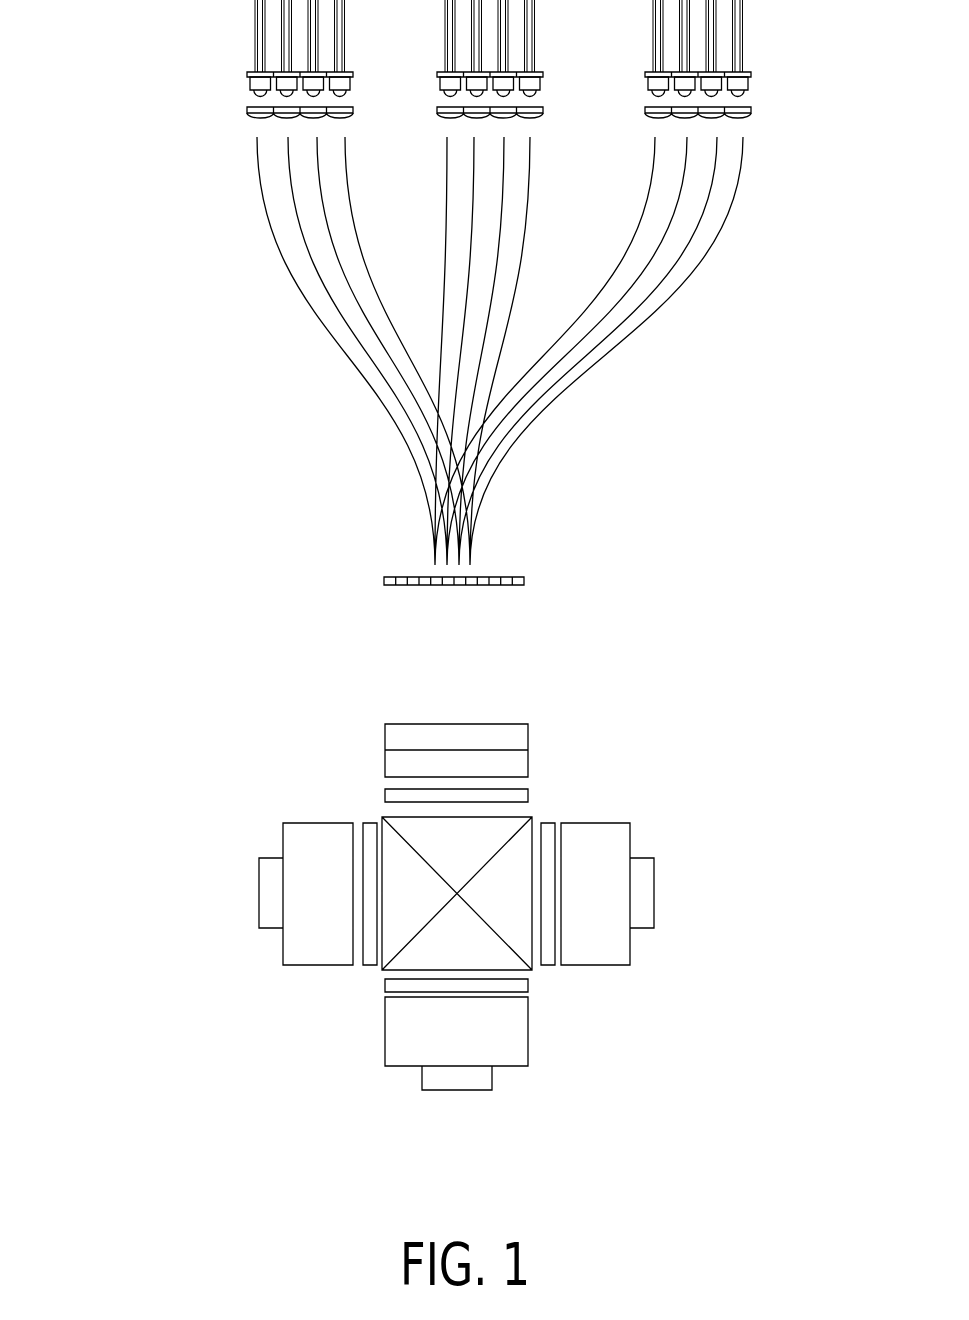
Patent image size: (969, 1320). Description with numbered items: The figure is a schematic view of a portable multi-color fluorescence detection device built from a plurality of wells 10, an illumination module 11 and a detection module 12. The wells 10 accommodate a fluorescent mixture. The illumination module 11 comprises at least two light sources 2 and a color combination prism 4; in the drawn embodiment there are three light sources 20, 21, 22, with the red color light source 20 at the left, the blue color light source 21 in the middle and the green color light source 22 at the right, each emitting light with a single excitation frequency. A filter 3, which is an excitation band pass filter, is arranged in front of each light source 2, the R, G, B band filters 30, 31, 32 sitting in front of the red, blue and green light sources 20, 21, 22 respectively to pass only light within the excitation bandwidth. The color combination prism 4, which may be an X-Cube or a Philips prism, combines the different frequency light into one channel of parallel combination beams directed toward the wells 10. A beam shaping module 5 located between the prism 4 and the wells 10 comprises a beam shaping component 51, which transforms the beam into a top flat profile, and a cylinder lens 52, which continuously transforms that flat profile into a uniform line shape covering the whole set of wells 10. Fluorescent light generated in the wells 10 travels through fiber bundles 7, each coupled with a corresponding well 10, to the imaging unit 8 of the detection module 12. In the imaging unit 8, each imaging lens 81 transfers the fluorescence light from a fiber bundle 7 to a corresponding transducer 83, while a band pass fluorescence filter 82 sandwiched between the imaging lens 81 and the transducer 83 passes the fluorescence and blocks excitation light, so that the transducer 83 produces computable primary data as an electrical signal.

The detection module 12 is at (110, 58).
The imaging unit 8 is at (150, 40).
The transducer 83 is at (257, 73).
The filter 82 is at (248, 108).
The imaging lens 81 is at (258, 123).
The fiber bundle 7 is at (311, 385).
The well 10 is at (350, 586).
The illumination module 11 is at (137, 738).
The beam shaping module 5 is at (247, 712).
The cylinder lens 52 is at (353, 743).
The beam shaping component 51 is at (385, 796).
The color combination prism 4 is at (537, 800).
The light source 2 is at (807, 703).
The red color light source 20 is at (259, 893).
The blue color light source 21 is at (455, 1092).
The green color light source 22 is at (655, 893).
The filter 3 is at (815, 905).
The R band filter 30 is at (370, 965).
The B band filter 31 is at (530, 985).
The G band filter 32 is at (548, 820).